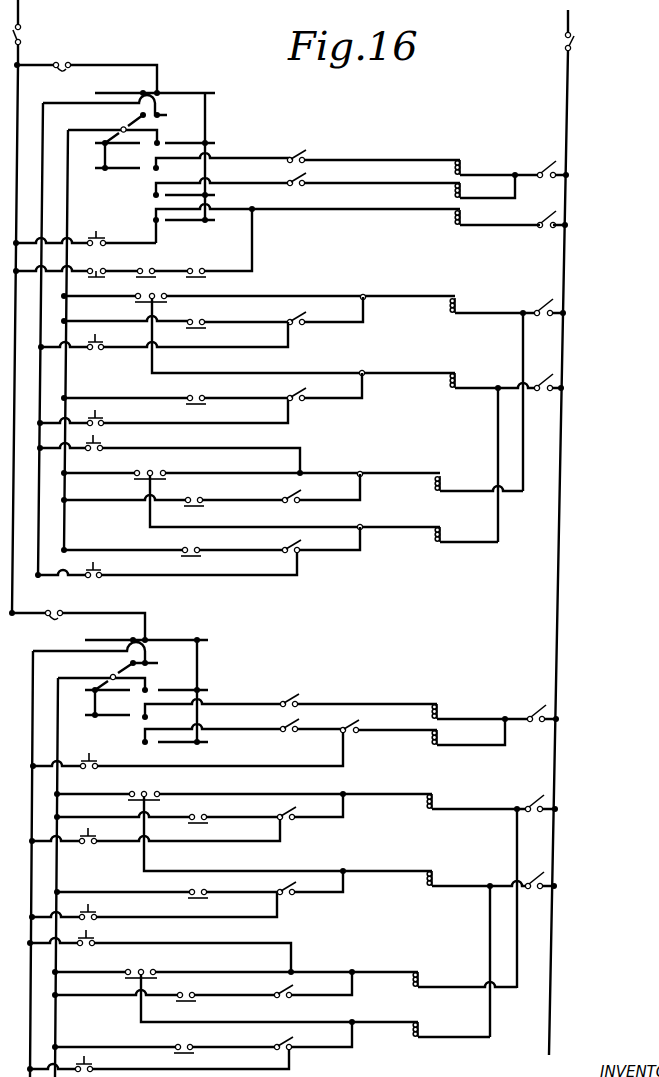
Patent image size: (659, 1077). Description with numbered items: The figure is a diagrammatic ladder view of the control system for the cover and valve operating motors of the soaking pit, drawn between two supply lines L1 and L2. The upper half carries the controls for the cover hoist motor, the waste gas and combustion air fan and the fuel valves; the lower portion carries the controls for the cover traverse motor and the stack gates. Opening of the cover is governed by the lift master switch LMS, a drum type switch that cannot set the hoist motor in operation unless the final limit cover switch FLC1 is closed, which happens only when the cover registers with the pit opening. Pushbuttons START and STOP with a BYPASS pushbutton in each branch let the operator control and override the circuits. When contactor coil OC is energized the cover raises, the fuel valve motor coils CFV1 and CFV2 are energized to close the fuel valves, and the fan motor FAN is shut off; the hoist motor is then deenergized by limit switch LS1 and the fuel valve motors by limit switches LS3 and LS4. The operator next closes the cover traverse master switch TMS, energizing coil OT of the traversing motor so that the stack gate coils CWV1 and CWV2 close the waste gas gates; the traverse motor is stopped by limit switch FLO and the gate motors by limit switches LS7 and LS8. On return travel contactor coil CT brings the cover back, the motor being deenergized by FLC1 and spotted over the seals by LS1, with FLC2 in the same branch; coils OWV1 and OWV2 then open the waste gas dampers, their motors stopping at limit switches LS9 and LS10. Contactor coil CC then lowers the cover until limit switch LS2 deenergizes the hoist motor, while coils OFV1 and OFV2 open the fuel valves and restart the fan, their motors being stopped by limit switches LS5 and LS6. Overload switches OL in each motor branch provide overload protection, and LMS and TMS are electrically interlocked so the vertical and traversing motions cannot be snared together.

The power line L1 is at (579, 532).
The power line L2 is at (33, 306).
The final limit cover switch FLC1 is at (85, 68).
The float switch contact FLC2 is at (388, 719).
The limit switch FLO is at (353, 694).
The lift master switch LMS is at (249, 334).
The cover traverse master switch TMS is at (156, 857).
The limit switch LS1 is at (372, 150).
The limit switch LS2 is at (372, 174).
The limit switch LS3 is at (298, 312).
The limit switch LS4 is at (298, 388).
The limit switch LS5 is at (210, 490).
The limit switch LS6 is at (210, 541).
The limit switch LS7 is at (289, 807).
The limit switch LS8 is at (288, 883).
The limit switch LS9 is at (279, 986).
The limit switch LS10 is at (280, 1038).
The contactor coil OC is at (512, 168).
The contactor coil CC is at (485, 187).
The fan motor FAN is at (511, 218).
The overload switches OL is at (542, 189).
The start push button START is at (84, 232).
The stop push button STOP is at (132, 243).
The by pass push button BYPASS is at (185, 697).
The fuel valve motor coil CFV1 is at (313, 389).
The fuel valve motor coil CFV2 is at (312, 453).
The contactor coil OFV1 is at (479, 481).
The contactor coil OFV2 is at (466, 533).
The coil OT is at (306, 783).
The contactor coil CT is at (278, 872).
The stack gate motor coil CWV1 is at (305, 891).
The stack gate motor coil CWV2 is at (305, 948).
The contactor coil OWV1 is at (465, 978).
The contactor coil OWV2 is at (271, 1036).